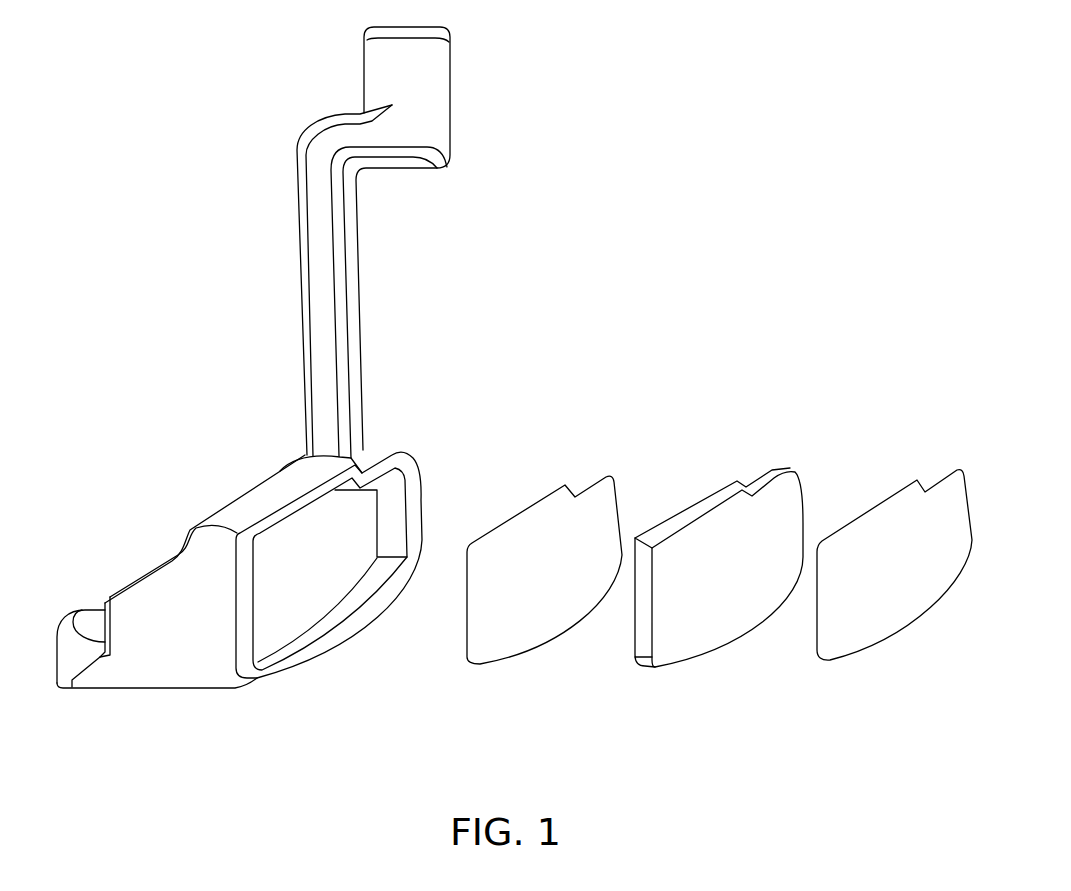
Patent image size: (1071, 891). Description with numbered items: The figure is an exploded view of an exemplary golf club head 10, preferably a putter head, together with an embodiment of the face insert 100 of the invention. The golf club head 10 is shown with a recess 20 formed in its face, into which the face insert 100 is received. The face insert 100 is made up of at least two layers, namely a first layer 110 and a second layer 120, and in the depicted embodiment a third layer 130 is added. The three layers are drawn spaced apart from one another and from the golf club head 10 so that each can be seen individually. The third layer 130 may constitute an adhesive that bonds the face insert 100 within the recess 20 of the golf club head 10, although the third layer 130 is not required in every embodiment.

The golf club head 10 is at (276, 357).
The recess 20 is at (300, 600).
The face insert 100 is at (719, 599).
The first layer 110 is at (894, 563).
The second layer 120 is at (726, 482).
The third layer 130 is at (548, 499).